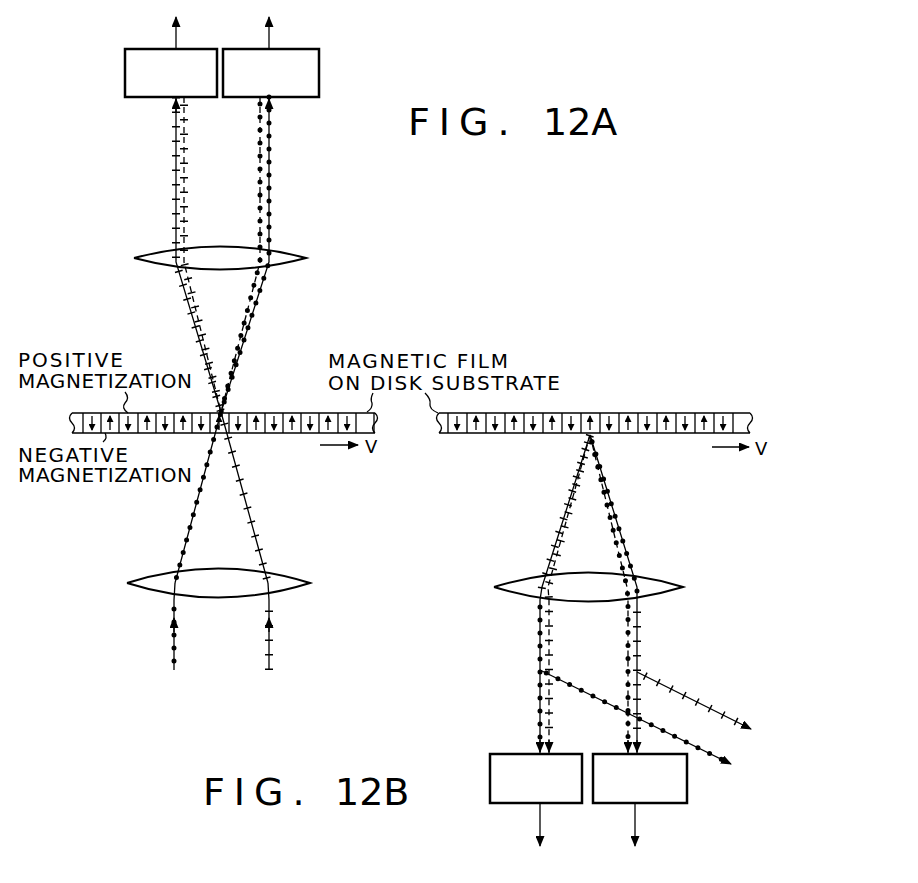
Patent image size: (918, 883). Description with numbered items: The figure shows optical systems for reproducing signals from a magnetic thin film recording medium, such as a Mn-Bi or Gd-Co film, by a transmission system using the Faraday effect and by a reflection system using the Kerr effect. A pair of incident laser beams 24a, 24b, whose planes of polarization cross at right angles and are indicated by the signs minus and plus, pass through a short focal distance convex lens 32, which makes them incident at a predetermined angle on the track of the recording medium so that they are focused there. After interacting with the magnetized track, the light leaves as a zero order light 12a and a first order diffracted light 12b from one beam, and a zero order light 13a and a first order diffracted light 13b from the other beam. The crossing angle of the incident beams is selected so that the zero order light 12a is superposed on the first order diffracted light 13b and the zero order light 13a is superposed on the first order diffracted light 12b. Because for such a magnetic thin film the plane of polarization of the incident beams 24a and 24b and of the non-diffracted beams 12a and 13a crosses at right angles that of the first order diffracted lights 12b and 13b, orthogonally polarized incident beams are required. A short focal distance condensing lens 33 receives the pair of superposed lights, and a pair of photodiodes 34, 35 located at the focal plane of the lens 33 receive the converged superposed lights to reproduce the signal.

In FIG. 12A, the zero order light 12a is at (271, 152).
In FIG. 12B, the zero order light 12a is at (624, 549).
In FIG. 12A, the first order diffracted light 12b is at (185, 152).
In FIG. 12B, the first order diffracted light 12b is at (549, 711).
In FIG. 12A, the zero order light 13a is at (174, 152).
In FIG. 12B, the zero order light 13a is at (552, 549).
In FIG. 12A, the first order diffracted light 13b is at (258, 200).
In FIG. 12B, the first order diffracted light 13b is at (627, 741).
In FIG. 12A, the laser beam 24a is at (173, 637).
In FIG. 12B, the laser beam 24a is at (567, 502).
In FIG. 12A, the laser beam 24b is at (271, 637).
In FIG. 12B, the laser beam 24b is at (612, 502).
In FIG. 12A, the short focal distance convex lens 32 is at (276, 581).
In FIG. 12B, the short focal distance convex lens 32 is at (674, 591).
In FIG. 12A, the short focal distance condensing lens 33 is at (277, 260).
In FIG. 12A, the photodiode 34 is at (321, 71).
In FIG. 12B, the photodiode 34 is at (687, 785).
In FIG. 12A, the photodiode 35 is at (124, 71).
In FIG. 12B, the photodiode 35 is at (490, 786).